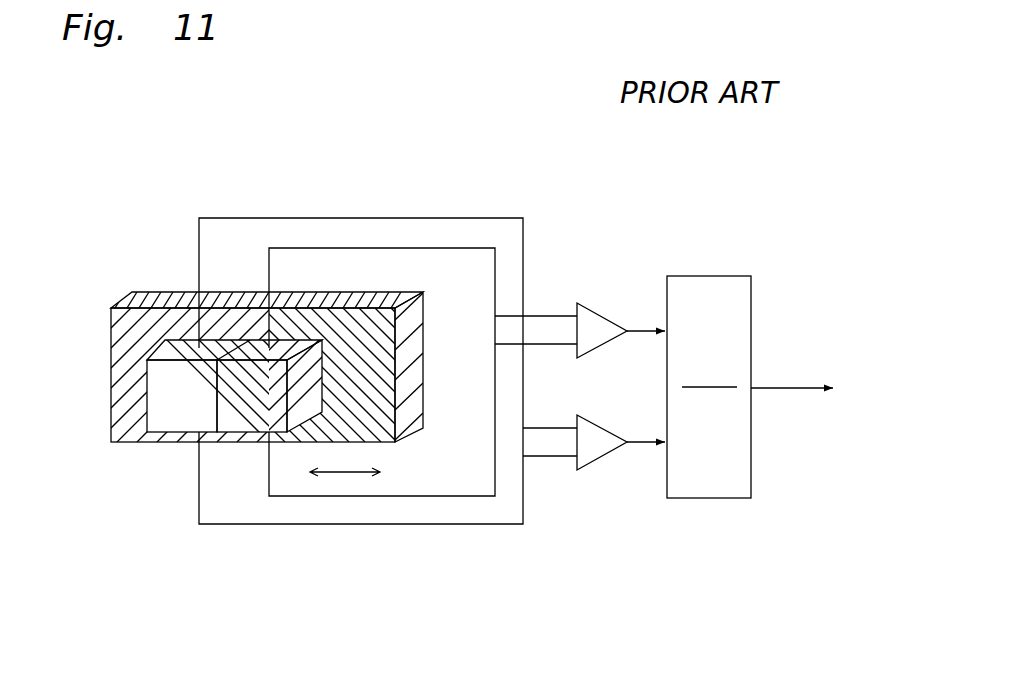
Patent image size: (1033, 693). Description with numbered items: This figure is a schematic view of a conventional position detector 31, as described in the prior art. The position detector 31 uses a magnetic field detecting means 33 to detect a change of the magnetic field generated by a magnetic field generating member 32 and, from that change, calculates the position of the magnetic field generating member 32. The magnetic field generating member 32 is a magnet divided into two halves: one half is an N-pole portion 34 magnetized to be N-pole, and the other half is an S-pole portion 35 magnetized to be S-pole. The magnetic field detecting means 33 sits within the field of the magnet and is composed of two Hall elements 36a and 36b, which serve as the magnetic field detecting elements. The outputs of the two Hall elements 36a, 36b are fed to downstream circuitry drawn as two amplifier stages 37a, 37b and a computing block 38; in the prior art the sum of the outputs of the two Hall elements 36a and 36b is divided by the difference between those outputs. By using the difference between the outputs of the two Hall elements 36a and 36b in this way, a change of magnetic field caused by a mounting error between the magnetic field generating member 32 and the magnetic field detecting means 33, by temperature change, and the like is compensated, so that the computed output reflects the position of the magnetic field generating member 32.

The position detector 31 is at (157, 153).
The magnetic field generating member 32 is at (142, 282).
The magnetic field detecting means 33 is at (209, 460).
The N-pole portion 34 is at (173, 328).
The S-pole portion 35 is at (343, 330).
The Hall element 36a is at (248, 408).
The Hall element 36b is at (192, 415).
The differential amplifier A 37a is at (602, 308).
The differential amplifier B 37b is at (602, 466).
The arithmetic unit (B+A)/(B-A) 38 is at (705, 276).